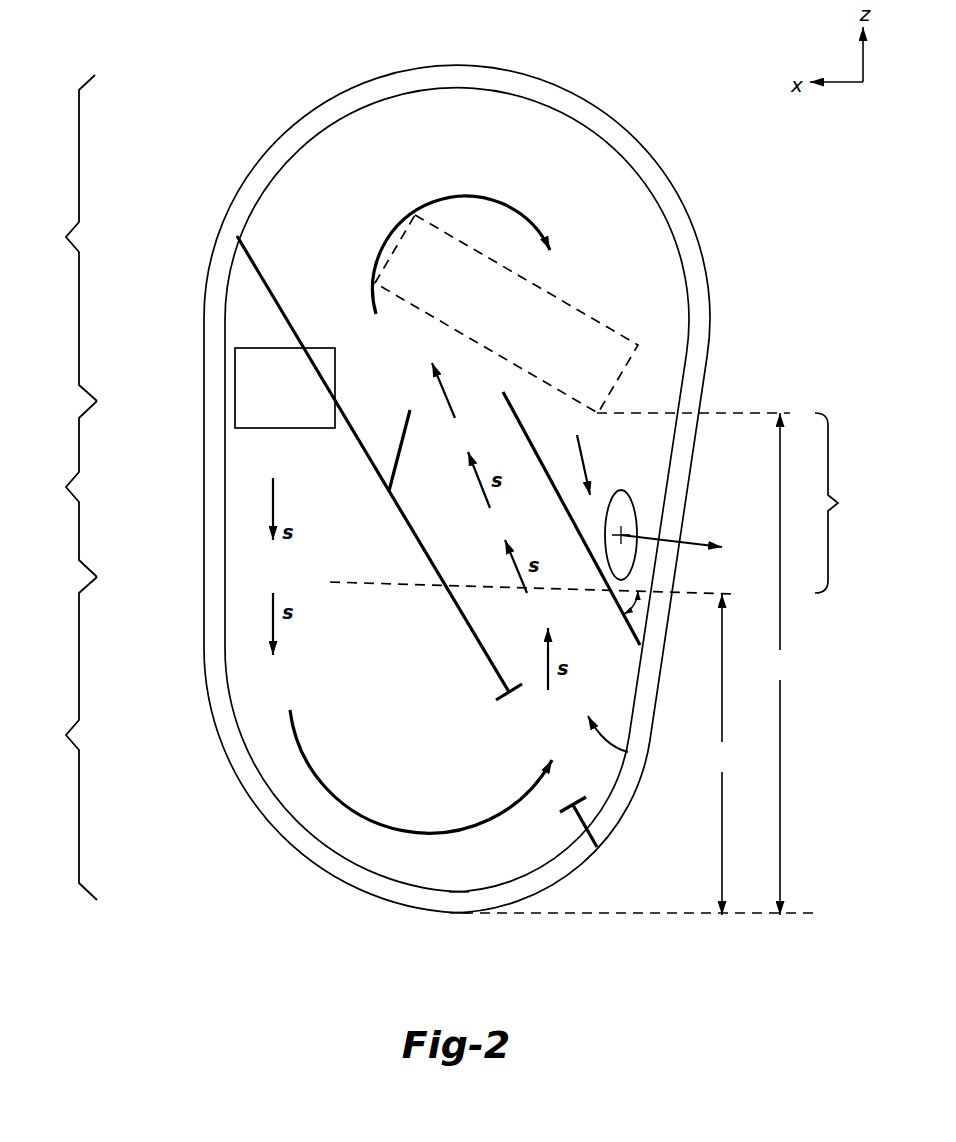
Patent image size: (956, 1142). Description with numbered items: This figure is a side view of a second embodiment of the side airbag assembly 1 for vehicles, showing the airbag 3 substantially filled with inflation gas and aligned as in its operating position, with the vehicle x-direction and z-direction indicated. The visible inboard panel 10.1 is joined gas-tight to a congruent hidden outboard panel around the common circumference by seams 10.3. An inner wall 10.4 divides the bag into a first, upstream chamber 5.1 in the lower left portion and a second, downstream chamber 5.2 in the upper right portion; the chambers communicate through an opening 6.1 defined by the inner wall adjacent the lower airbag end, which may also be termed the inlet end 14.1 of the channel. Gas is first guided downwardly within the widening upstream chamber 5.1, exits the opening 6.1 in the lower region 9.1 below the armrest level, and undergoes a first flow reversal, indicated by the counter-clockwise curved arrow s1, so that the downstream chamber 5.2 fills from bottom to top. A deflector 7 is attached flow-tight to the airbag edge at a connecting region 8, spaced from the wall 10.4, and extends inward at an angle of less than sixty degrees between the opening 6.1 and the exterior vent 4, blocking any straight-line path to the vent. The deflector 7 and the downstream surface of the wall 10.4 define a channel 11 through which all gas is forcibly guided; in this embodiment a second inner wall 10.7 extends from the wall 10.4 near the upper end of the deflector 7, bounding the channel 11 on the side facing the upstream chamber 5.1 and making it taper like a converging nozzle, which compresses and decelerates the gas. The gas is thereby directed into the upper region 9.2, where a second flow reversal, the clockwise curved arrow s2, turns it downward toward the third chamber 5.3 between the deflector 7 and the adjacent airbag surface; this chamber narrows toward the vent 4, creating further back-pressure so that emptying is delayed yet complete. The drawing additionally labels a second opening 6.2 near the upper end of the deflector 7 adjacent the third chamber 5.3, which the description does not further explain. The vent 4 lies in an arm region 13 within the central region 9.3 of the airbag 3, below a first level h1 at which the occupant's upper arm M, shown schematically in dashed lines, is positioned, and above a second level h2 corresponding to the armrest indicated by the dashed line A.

The side airbag assembly 1 is at (698, 172).
The airbag 3 is at (702, 258).
The exterior vent 4 is at (638, 550).
The first chamber 5.1 is at (350, 828).
The second chamber 5.2 is at (322, 190).
The third chamber 5.3 is at (652, 393).
The opening 6.1 is at (550, 797).
The upper guide element 6.2 is at (657, 372).
The deflector 7 is at (580, 538).
The connecting region 8 is at (634, 648).
The lower region 9.1 is at (61, 738).
The upper region 9.2 is at (61, 238).
The central region 9.3 is at (61, 489).
The inboard panel 10.1 is at (246, 308).
The seams 10.3 is at (415, 892).
The inner wall 10.4 is at (258, 268).
The second inner wall 10.7 is at (401, 445).
The channel 11 is at (472, 533).
The arm region 13 is at (842, 503).
The inlet end 14.1 is at (647, 751).
The upper arm M is at (557, 297).
The dashed line A is at (541, 593).
The first level h1 is at (639, 664).
The second level h2 is at (719, 754).
The counter-clockwise curved arrow s1 is at (422, 833).
The clockwise curved arrow s2 is at (465, 197).